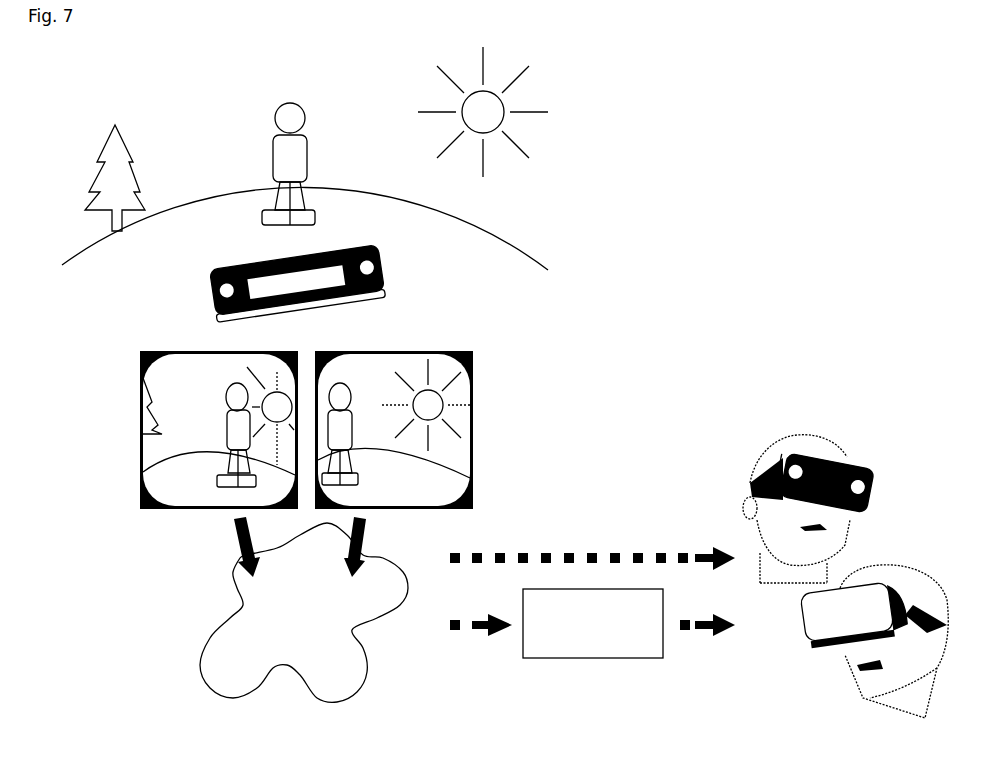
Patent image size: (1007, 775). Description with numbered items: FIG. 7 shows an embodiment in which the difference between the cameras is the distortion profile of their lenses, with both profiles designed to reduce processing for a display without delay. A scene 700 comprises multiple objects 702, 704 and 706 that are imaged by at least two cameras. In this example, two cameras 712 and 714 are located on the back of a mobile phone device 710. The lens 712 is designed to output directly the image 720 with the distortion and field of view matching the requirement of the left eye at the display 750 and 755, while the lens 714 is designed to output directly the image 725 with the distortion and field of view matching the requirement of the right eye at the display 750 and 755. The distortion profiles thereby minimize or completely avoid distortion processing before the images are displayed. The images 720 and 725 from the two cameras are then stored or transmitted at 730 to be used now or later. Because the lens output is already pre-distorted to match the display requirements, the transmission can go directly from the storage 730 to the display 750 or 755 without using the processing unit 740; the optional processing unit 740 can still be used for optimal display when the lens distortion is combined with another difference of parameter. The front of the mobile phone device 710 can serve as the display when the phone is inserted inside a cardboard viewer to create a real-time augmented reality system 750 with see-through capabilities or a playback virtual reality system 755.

The scene 700 is at (305, 166).
The object 702 is at (124, 178).
The object 704 is at (307, 164).
The object 706 is at (483, 112).
The mobile phone device 710 is at (293, 285).
The camera lens 712 is at (209, 298).
The camera lens 714 is at (380, 264).
The image 720 is at (219, 430).
The image 725 is at (394, 430).
The storage or transmission 730 is at (304, 609).
The processing unit 740 is at (593, 623).
The augmented reality system 750 is at (808, 509).
The virtual reality system 755 is at (874, 641).